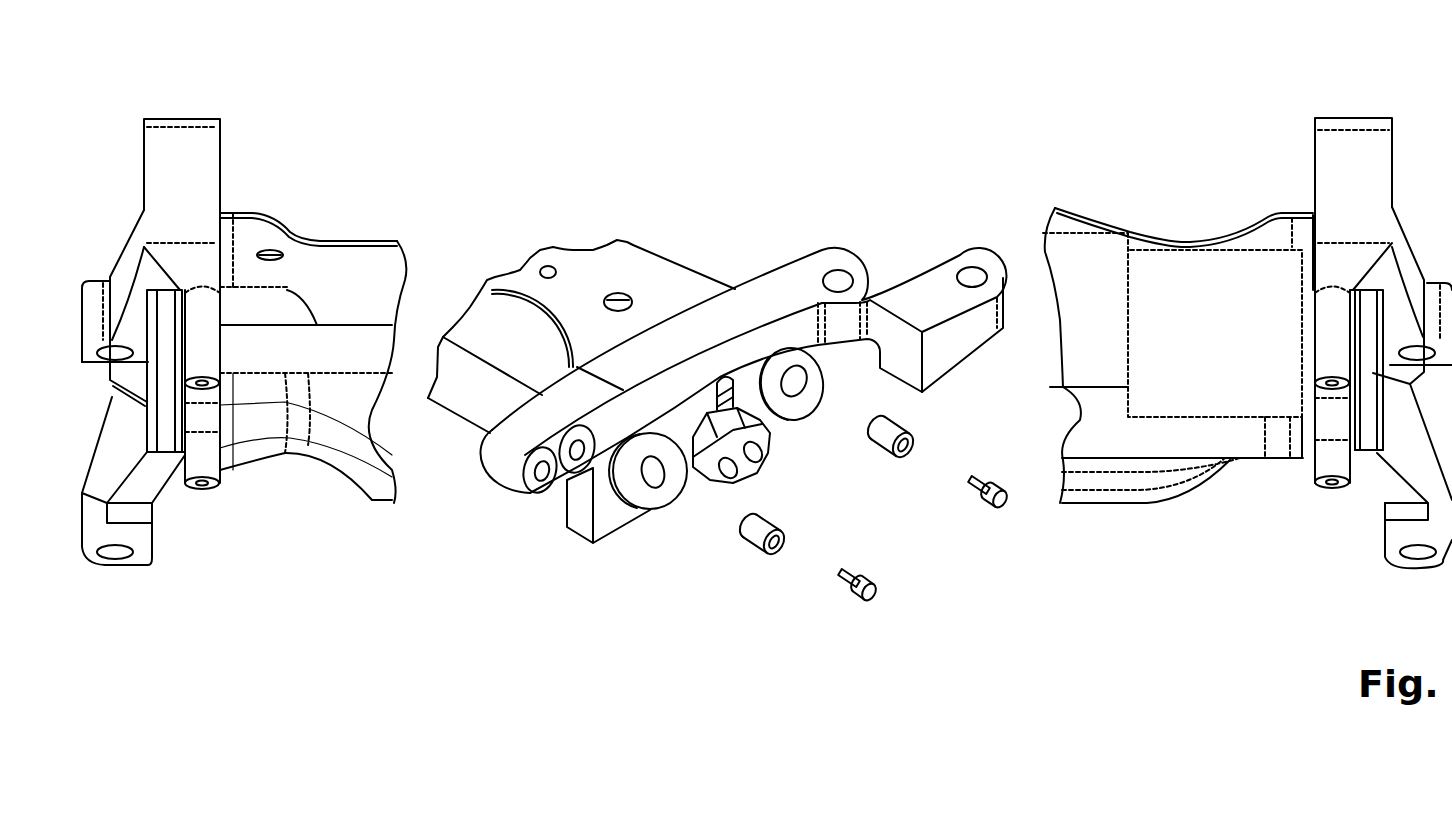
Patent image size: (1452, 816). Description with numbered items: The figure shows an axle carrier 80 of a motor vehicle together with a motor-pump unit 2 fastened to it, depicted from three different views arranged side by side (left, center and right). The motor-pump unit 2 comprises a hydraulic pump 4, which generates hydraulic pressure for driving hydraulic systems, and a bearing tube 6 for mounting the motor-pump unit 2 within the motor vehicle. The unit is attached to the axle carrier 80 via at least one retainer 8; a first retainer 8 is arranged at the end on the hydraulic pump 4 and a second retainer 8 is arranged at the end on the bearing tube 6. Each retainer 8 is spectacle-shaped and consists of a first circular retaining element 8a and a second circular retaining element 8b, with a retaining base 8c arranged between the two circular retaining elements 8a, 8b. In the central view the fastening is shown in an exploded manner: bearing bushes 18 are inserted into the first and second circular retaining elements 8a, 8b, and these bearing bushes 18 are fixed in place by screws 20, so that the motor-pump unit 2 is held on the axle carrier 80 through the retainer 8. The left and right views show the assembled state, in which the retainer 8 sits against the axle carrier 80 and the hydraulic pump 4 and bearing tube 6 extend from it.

The motor-pump unit 2 is at (320, 155).
The hydraulic pump 4 is at (464, 440).
The bearing tube 6 is at (347, 337).
The retainer 8 is at (162, 452).
The first circular retaining element 8a is at (803, 403).
The second circular retaining element 8b is at (648, 497).
The retaining base 8c is at (697, 478).
The bearing bush 18 is at (878, 457).
The screw 20 is at (972, 490).
The axle carrier 80 is at (273, 230).